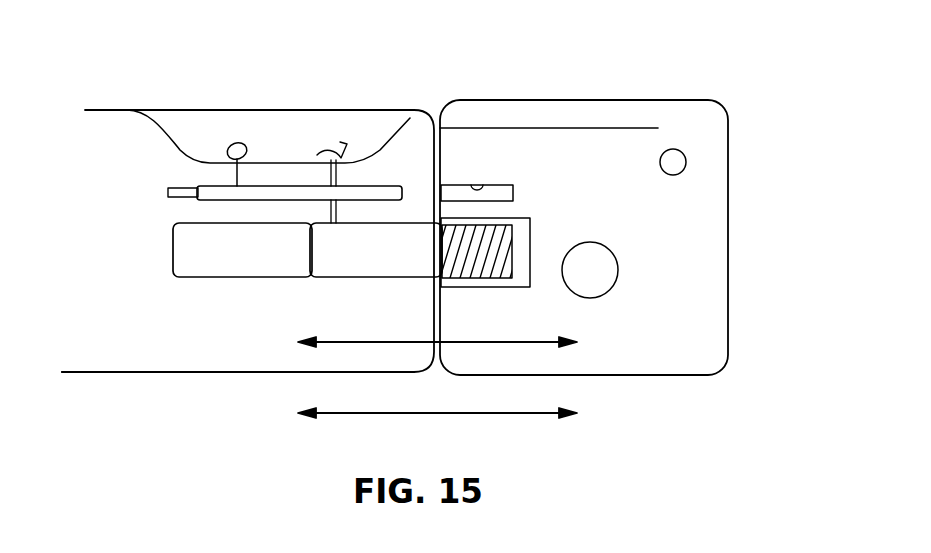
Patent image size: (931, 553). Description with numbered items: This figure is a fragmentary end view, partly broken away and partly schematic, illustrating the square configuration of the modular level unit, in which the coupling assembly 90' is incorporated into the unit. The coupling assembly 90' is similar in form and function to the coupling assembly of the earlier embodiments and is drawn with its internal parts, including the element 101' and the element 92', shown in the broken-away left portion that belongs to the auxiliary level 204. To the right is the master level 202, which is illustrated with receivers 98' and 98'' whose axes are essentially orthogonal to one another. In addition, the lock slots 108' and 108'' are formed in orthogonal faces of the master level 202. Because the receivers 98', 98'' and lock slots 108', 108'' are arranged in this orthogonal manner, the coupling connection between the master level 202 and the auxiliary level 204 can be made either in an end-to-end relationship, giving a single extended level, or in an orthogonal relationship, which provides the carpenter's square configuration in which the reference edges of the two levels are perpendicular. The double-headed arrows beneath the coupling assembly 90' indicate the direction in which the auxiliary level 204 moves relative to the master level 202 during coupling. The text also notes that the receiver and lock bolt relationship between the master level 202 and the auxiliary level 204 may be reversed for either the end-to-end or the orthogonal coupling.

The coupling assembly 90' is at (248, 187).
The tray plate 101' is at (285, 137).
The housing box 92' is at (307, 272).
The lock slot 108' is at (457, 118).
The lock slot 108'' is at (674, 116).
The receiver 98' is at (499, 229).
The receiver 98'' is at (614, 294).
The master level 202 is at (701, 232).
The auxiliary level 204 is at (193, 350).